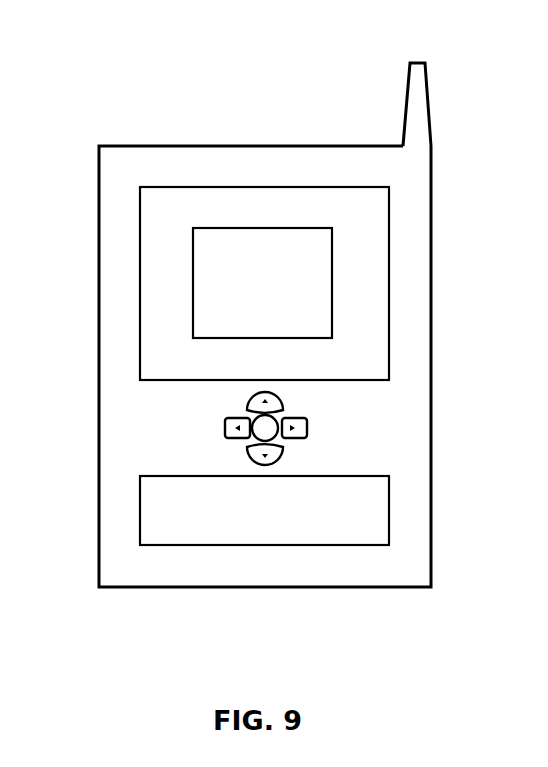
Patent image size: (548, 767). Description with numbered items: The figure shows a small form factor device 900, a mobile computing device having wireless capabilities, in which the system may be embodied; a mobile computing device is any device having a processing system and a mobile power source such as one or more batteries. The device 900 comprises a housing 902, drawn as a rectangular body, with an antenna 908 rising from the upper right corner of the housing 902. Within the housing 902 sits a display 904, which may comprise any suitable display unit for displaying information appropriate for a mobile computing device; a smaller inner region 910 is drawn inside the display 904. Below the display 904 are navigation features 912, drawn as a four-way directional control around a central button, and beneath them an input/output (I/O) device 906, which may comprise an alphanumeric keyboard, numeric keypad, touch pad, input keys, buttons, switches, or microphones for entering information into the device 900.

The small form factor device 900 is at (112, 78).
The housing 902 is at (431, 367).
The display 904 is at (389, 202).
The input/output (I/O) device 906 is at (389, 504).
The antenna 908 is at (405, 98).
The display window 910 is at (332, 297).
The navigation features 912 is at (315, 422).